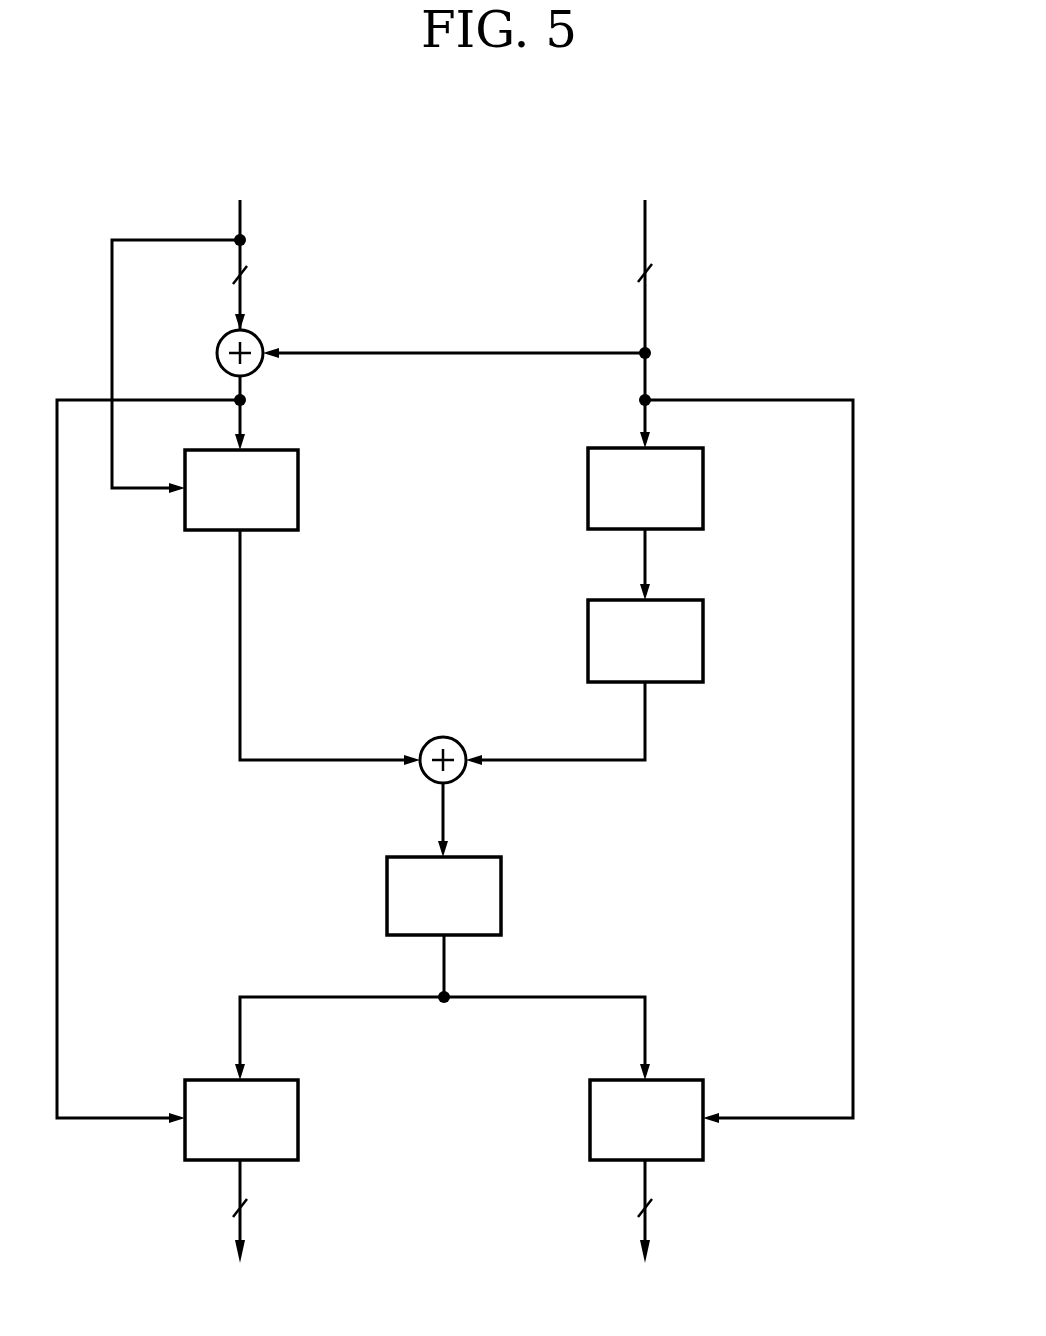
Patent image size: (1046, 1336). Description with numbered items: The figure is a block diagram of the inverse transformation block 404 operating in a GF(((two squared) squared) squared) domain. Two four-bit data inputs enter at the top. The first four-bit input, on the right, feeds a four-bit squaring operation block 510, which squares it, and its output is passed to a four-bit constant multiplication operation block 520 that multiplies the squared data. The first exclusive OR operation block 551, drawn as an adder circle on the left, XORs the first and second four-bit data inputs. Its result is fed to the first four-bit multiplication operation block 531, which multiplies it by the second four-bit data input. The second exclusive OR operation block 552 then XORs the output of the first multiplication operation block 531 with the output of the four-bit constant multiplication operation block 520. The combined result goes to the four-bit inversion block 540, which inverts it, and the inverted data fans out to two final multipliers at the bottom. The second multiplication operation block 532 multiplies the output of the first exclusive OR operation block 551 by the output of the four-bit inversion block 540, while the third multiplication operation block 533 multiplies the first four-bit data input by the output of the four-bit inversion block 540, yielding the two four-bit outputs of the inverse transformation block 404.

The inverse transformation block 404 is at (838, 220).
The 4-bit squaring operation block 510 is at (705, 490).
The 4-bit constant multiplication operation block 520 is at (705, 640).
The first 4-bit multiplication operation block 531 is at (300, 490).
The second 4-bit multiplication operation block 532 is at (267, 1078).
The third 4-bit multiplication operation block 533 is at (672, 1078).
The 4-bit inversion block 540 is at (503, 896).
The first exclusive OR operation block 551 is at (262, 338).
The second exclusive OR operation block 552 is at (443, 737).